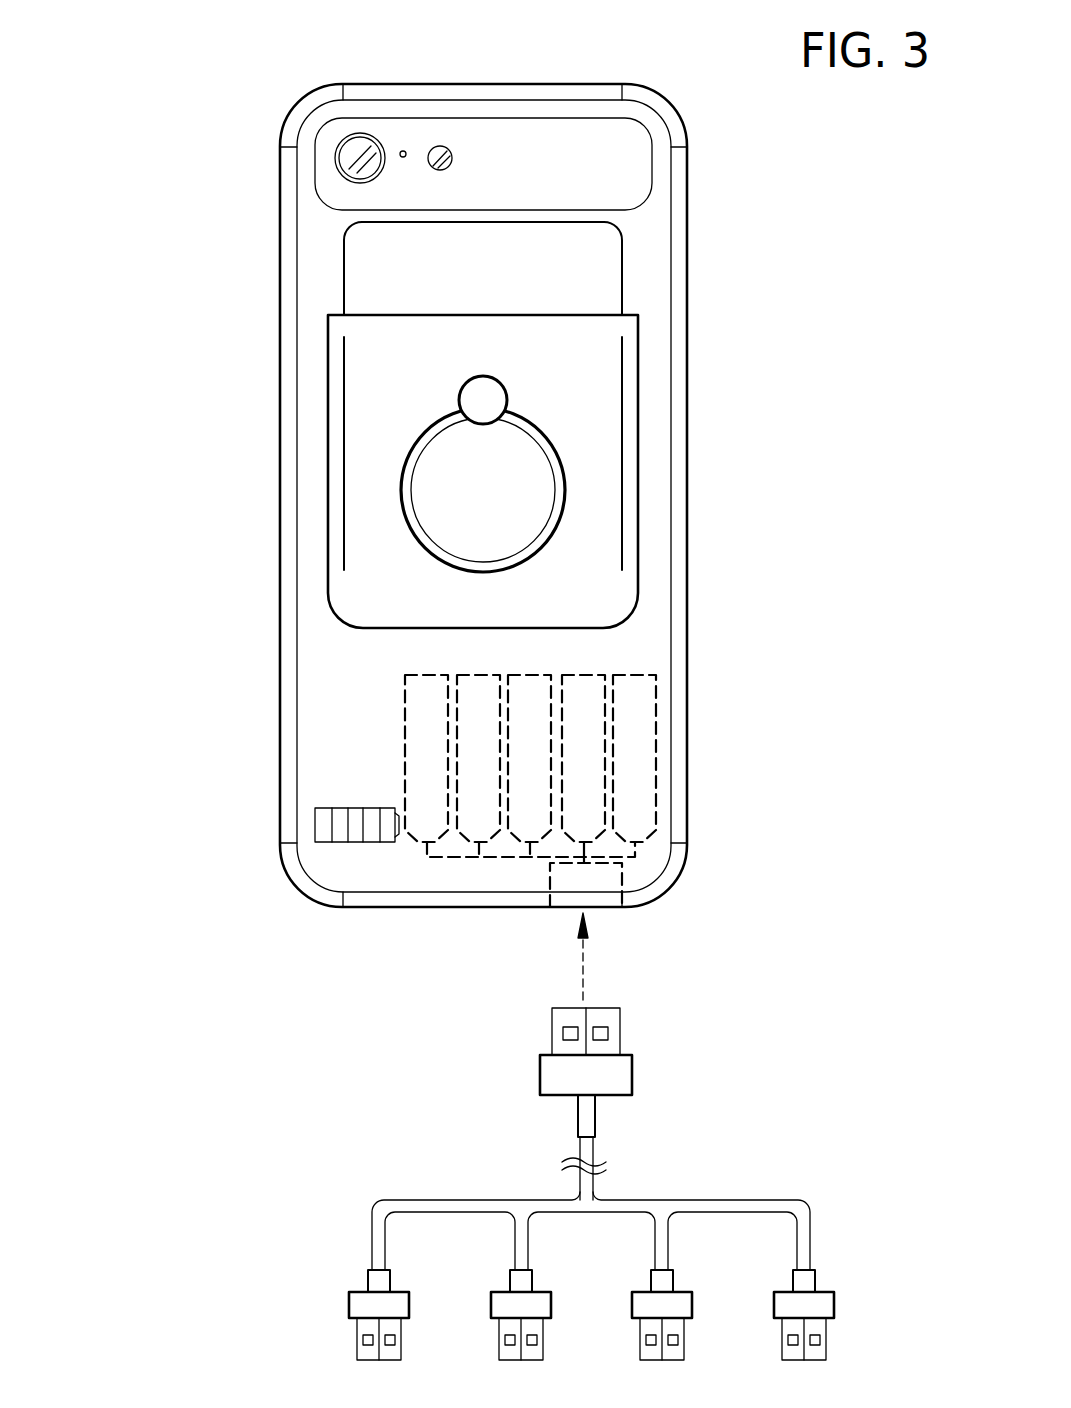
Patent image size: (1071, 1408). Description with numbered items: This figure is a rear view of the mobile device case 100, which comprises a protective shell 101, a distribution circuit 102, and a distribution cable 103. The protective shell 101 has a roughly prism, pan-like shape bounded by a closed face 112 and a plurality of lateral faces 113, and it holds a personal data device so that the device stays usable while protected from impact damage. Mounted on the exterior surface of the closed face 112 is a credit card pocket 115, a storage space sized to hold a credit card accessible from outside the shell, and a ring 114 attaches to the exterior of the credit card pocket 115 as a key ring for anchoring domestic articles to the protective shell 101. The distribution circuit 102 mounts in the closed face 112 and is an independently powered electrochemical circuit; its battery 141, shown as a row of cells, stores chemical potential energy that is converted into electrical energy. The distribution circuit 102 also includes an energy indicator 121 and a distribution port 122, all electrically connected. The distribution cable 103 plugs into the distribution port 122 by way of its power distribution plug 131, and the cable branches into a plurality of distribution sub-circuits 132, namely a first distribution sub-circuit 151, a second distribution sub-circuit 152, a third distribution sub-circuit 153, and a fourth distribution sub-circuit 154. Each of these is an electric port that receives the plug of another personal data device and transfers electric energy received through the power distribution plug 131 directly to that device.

The mobile device case 100 is at (126, 168).
The protective shell 101 is at (287, 115).
The distribution circuit 102 is at (278, 752).
The lateral faces 113 is at (607, 84).
The closed face 112 is at (635, 242).
The credit card pocket 115 is at (592, 385).
The ring 114 is at (558, 475).
The battery 141 is at (632, 750).
The energy indicator 121 is at (333, 833).
The distribution port 122 is at (602, 880).
The power distribution plug 131 is at (620, 1073).
The distribution cable 103 is at (633, 1183).
The plurality of distribution sub-circuits 132 is at (837, 1330).
The first distribution sub-circuit 151 is at (380, 1360).
The second distribution sub-circuit 152 is at (522, 1360).
The third distribution sub-circuit 153 is at (663, 1360).
The fourth distribution sub-circuit 154 is at (805, 1360).